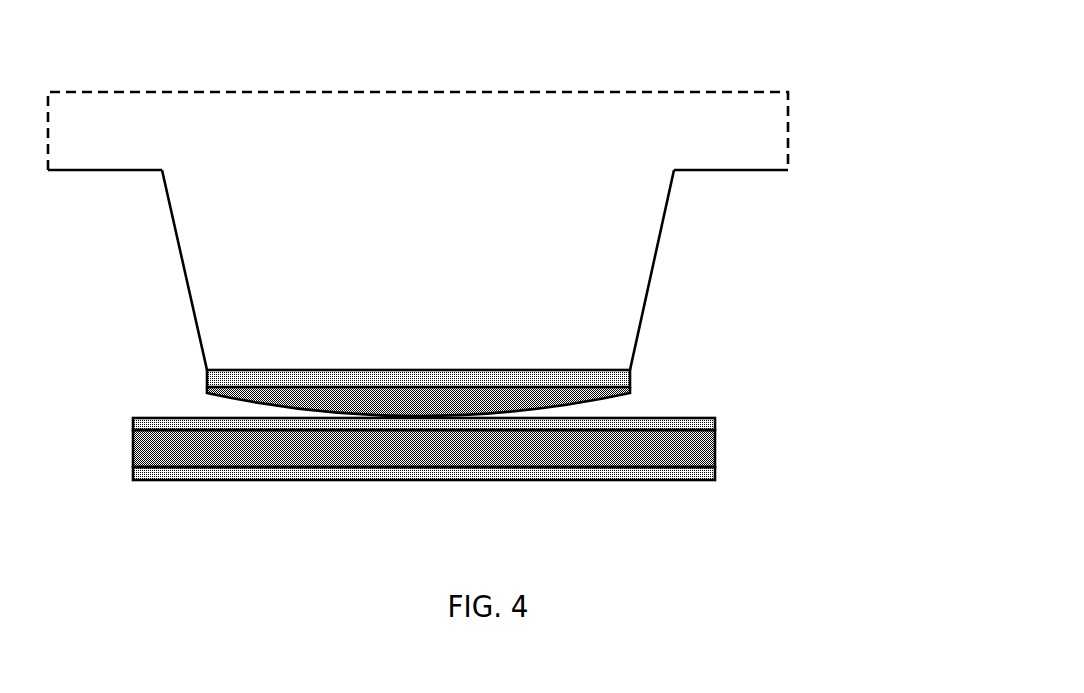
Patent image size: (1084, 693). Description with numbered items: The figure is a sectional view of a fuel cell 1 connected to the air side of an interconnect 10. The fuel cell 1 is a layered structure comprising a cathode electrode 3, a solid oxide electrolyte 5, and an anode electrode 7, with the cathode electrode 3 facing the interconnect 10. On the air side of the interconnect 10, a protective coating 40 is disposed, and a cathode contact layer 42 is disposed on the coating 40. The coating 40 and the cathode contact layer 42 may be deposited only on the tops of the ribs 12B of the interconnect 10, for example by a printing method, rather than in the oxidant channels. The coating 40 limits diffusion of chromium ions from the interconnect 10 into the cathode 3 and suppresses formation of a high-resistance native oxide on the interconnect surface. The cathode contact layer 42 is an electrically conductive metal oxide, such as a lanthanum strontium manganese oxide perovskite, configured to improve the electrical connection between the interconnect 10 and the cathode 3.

The fuel cell 1 is at (547, 496).
The cathode electrode 3 is at (716, 424).
The solid oxide electrolyte 5 is at (716, 450).
The anode electrode 7 is at (716, 475).
The interconnect 10 is at (450, 148).
The ribs 12B is at (403, 318).
The protective coating 40 is at (630, 383).
The cathode contact layer 42 is at (628, 403).